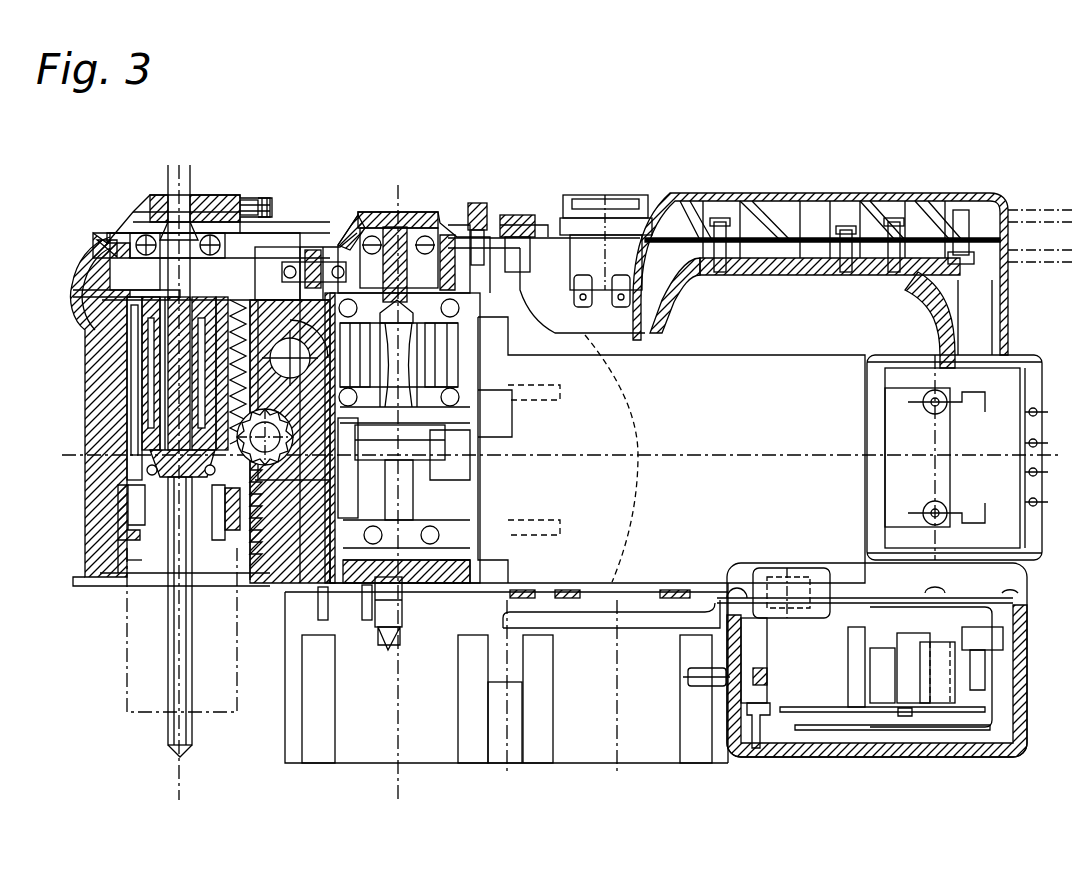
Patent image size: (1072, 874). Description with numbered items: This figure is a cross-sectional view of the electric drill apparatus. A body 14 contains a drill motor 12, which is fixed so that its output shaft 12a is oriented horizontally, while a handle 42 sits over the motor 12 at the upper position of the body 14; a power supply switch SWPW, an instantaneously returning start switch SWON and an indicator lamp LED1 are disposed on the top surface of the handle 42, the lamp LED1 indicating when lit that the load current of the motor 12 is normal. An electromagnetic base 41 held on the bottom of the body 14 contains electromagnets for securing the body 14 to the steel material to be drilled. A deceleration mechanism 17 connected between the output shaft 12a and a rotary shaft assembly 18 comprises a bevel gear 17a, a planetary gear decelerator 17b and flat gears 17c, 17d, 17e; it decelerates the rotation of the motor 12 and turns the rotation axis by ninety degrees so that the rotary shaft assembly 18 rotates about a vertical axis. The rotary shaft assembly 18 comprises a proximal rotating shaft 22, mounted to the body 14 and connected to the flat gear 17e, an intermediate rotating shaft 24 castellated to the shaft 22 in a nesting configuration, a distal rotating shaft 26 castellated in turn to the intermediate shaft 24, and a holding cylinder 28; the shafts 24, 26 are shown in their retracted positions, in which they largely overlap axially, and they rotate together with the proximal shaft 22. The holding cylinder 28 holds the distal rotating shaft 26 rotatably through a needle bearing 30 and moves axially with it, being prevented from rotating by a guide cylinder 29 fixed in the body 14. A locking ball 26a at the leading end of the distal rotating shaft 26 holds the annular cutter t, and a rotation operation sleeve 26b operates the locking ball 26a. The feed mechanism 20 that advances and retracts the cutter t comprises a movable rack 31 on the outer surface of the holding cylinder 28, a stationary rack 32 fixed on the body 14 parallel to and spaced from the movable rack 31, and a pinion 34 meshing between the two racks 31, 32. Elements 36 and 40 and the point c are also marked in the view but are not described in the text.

The drill motor 12 is at (787, 350).
The output shaft 12a is at (467, 445).
The body 14 is at (362, 212).
The deceleration mechanism 17 is at (262, 258).
The bevel gear 17a is at (452, 592).
The planetary gear decelerator 17b is at (355, 595).
The flat gear 17c is at (447, 238).
The flat gear 17d is at (350, 272).
The flat gear 17e is at (112, 262).
The rotary shaft assembly 18 is at (248, 198).
The feed mechanism 20 is at (278, 548).
The proximal rotating shaft 22 is at (224, 198).
The intermediate rotating shaft 24 is at (168, 195).
The distal rotating shaft 26 is at (135, 233).
The locking ball 26a is at (222, 545).
The rotation operation sleeve 26b is at (118, 575).
The holding cylinder 28 is at (72, 290).
The guide cylinder 29 is at (90, 588).
The needle bearing 30 is at (100, 262).
The movable rack 31 is at (300, 262).
The stationary rack 32 is at (300, 565).
The pinion 34 is at (316, 262).
The spindle 36 is at (184, 195).
The collar 40 is at (196, 208).
The electromagnetic base 41 is at (598, 693).
The handle 42 is at (755, 200).
The chuck tip c is at (182, 758).
The annular cutter t is at (222, 714).
The indicator lamp LED1 is at (482, 203).
The start switch SWON is at (512, 215).
The power supply switch SWPW is at (612, 195).